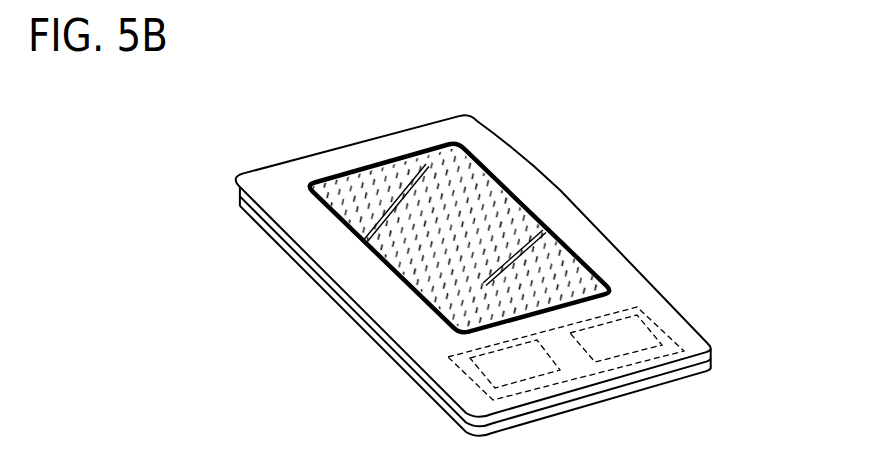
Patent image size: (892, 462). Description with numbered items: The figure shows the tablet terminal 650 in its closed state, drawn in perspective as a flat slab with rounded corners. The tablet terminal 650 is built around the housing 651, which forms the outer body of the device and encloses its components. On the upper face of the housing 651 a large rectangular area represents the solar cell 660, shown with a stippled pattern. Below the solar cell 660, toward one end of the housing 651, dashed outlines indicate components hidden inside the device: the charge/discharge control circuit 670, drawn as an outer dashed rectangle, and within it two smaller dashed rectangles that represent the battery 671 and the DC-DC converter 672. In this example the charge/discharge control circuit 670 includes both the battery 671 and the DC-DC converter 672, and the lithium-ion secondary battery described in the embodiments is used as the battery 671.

The tablet terminal 650 is at (262, 141).
The housing 651 is at (497, 147).
The solar cell 660 is at (483, 218).
The charge/discharge control circuit 670 is at (676, 338).
The battery 671 is at (508, 368).
The DC-DC converter 672 is at (625, 333).